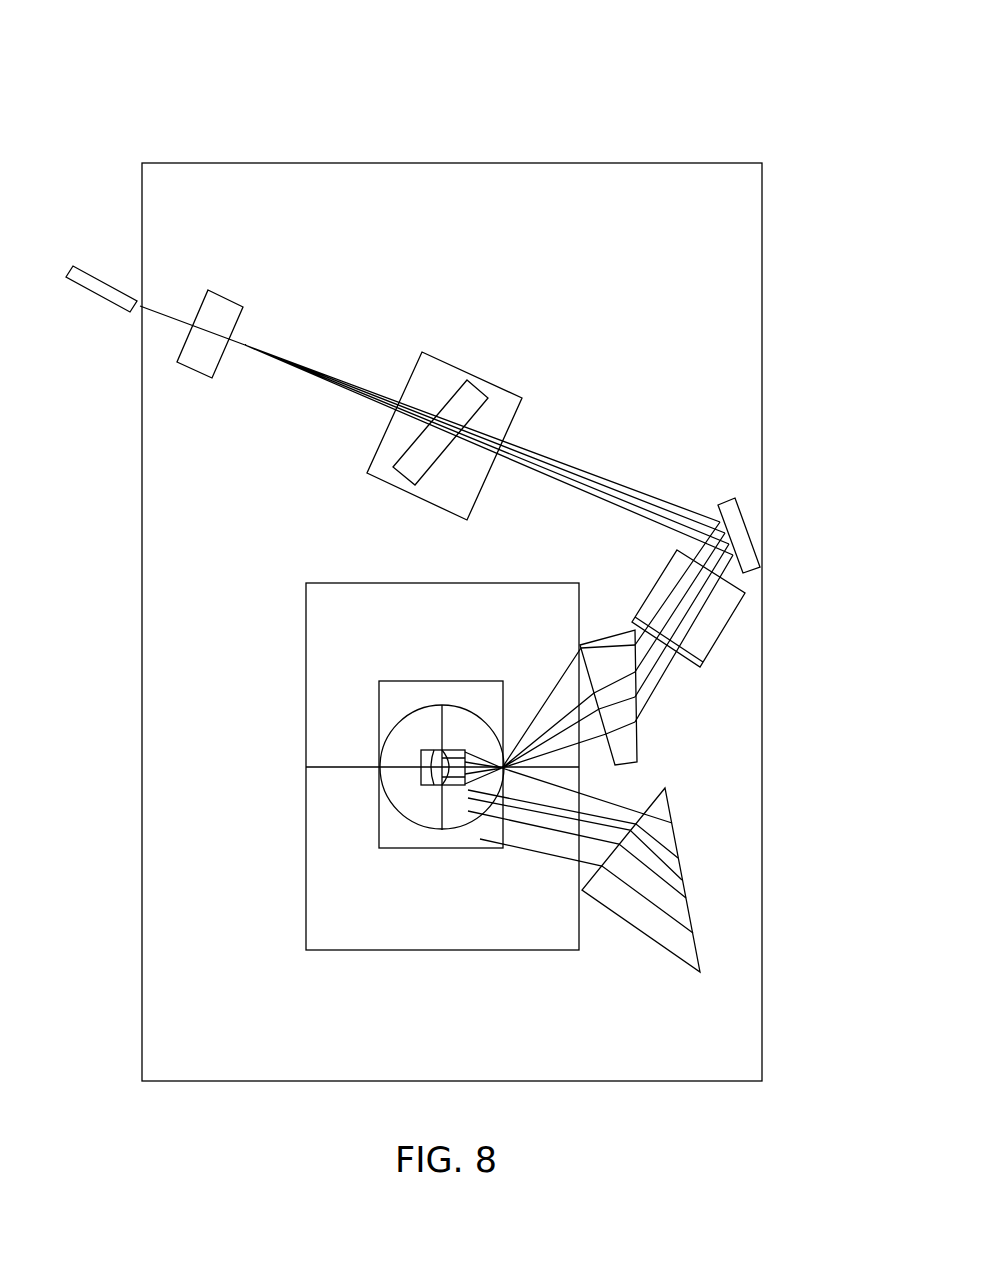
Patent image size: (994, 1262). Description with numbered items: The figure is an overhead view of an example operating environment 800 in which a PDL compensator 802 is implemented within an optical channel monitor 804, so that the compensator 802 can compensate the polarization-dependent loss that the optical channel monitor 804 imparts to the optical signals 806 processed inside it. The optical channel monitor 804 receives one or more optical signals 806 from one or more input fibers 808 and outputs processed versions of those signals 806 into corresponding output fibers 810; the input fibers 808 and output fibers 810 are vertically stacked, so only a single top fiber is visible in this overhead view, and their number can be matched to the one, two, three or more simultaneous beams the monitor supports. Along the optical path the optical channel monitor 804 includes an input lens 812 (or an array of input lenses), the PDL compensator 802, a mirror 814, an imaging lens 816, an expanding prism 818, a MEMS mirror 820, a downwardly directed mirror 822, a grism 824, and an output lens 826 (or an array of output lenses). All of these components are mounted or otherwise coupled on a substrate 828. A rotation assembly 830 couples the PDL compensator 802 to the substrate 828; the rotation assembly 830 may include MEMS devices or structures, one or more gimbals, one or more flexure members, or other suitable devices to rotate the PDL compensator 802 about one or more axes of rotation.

The operating environment 800 is at (642, 50).
The PDL compensator 802 is at (478, 388).
The optical channel monitor 804 is at (277, 163).
The optical signals 806 is at (592, 462).
The input fibers 808 is at (93, 249).
The output fibers 810 is at (102, 278).
The input lens 812 is at (198, 363).
The output lens 826 is at (198, 373).
The mirror 814 is at (733, 495).
The imaging lens 816 is at (737, 613).
The expanding prism 818 is at (607, 640).
The MEMS mirror 820 is at (403, 755).
The downwardly directed mirror 822 is at (398, 845).
The grism 824 is at (690, 908).
The substrate 828 is at (563, 201).
The rotation assembly 830 is at (437, 358).